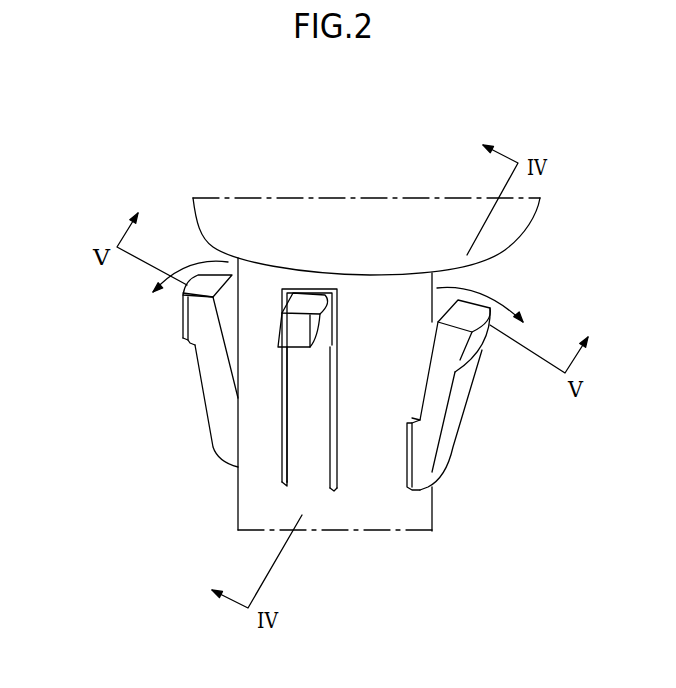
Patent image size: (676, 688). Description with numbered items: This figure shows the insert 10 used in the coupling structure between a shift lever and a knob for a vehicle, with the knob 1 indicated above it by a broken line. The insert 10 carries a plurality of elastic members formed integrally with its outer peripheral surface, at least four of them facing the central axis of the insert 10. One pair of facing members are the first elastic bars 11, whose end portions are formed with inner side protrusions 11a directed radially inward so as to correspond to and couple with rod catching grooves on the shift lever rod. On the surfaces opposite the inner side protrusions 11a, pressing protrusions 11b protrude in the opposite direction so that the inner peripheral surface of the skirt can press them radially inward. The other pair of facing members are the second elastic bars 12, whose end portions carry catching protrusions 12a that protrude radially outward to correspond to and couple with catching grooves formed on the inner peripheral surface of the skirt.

The knob 1 is at (295, 220).
The insert 10 is at (153, 413).
The first elastic bars 11 is at (305, 410).
The inner side protrusions 11a is at (338, 312).
The pressing protrusions 11b is at (283, 332).
The second elastic bars 12 is at (213, 392).
The catching protrusions 12a is at (182, 322).